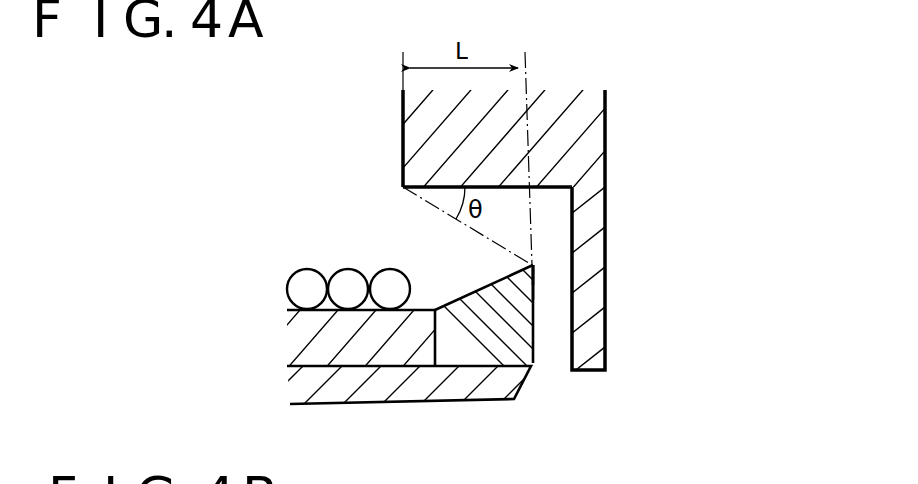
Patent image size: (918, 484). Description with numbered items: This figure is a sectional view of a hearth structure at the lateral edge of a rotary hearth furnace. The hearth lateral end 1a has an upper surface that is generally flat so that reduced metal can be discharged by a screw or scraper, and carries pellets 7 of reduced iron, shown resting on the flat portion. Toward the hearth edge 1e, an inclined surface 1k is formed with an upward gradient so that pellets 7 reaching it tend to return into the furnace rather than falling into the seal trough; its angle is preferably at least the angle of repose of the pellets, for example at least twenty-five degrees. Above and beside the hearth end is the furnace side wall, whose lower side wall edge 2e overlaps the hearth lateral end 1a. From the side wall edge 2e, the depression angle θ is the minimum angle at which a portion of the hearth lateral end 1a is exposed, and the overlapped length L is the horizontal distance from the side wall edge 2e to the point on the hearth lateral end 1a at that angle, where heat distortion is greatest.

The side wall edge 2e is at (397, 190).
The pellets 7 is at (346, 269).
The inclined surface 1k is at (465, 288).
The hearth edge 1e is at (542, 263).
The hearth lateral end 1a is at (514, 348).